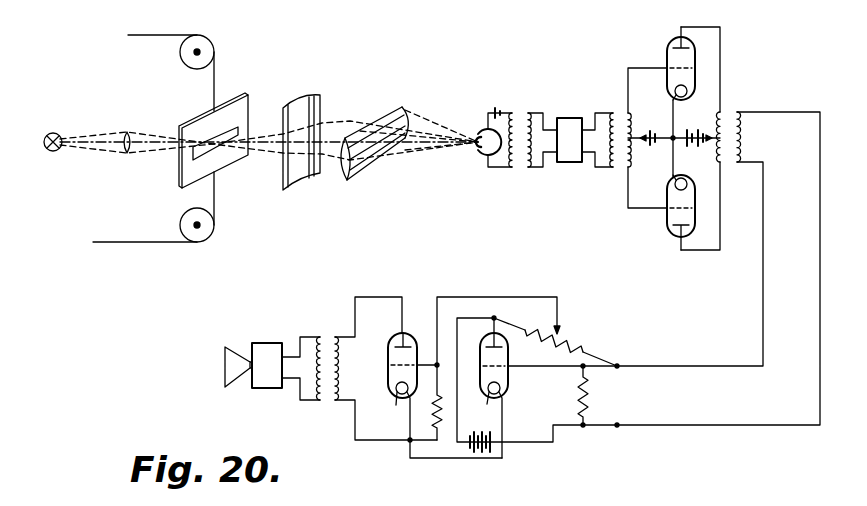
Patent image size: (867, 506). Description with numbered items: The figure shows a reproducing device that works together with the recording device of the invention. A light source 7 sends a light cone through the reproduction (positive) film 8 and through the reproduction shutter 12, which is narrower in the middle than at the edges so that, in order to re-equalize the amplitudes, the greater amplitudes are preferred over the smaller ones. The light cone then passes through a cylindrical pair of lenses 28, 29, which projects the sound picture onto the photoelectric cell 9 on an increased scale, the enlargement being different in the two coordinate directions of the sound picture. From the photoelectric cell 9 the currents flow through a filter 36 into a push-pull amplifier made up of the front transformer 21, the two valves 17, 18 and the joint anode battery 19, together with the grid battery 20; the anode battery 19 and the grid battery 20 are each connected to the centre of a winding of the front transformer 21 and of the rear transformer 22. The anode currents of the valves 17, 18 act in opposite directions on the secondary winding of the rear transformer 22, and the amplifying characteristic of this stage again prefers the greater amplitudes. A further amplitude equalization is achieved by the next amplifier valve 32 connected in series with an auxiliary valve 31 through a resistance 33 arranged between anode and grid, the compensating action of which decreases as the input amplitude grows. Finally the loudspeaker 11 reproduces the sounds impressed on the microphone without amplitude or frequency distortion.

The light source 7 is at (58, 149).
The reproduction film 8 is at (216, 185).
The reproduction shutter 12 is at (203, 125).
The cylindrical lens 28 is at (303, 178).
The cylindrical lens 29 is at (387, 122).
The photoelectric cell 9 is at (478, 130).
The filter 36 is at (569, 140).
The front transformer 21 is at (623, 117).
The grid battery 20 is at (652, 148).
The anode battery 19 is at (700, 131).
The valve 17 is at (670, 54).
The valve 18 is at (670, 217).
The rear transformer 22 is at (743, 140).
The loudspeaker 11 is at (253, 365).
The amplifier valve 32 is at (392, 361).
The auxiliary valve 31 is at (503, 379).
The potentiometer 33 is at (577, 348).